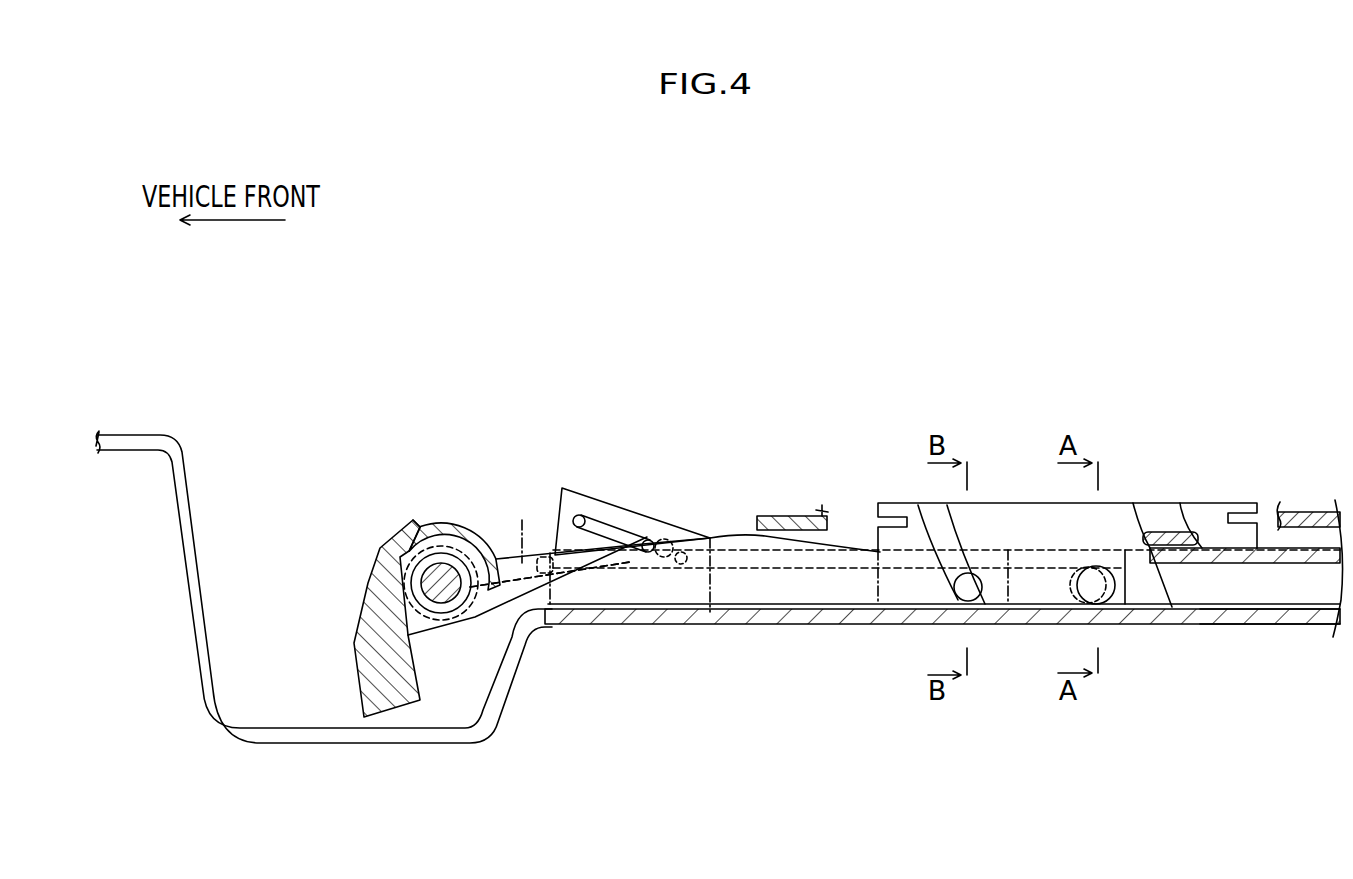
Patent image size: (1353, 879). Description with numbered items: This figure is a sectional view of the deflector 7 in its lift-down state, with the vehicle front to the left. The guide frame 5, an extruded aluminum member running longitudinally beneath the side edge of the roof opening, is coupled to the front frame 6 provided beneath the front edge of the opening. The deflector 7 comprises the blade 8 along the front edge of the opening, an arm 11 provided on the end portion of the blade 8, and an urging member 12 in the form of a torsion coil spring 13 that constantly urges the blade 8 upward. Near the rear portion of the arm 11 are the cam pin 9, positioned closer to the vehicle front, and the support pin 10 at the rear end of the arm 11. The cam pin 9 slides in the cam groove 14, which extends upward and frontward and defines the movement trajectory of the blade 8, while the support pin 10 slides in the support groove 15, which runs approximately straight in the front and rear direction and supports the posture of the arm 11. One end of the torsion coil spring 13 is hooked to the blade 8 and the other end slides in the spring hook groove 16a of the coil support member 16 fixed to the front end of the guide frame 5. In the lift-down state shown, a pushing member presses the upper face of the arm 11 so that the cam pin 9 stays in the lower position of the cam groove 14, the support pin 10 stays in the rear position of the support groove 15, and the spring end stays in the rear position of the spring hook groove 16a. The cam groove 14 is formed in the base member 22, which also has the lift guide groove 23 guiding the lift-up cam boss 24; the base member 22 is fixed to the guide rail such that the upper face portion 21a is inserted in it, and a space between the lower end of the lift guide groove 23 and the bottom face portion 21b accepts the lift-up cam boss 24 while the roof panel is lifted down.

The guide frame 5 is at (781, 644).
The front frame 6 is at (505, 690).
The deflector 7 is at (344, 558).
The blade 8 is at (370, 662).
The cam pin 9 is at (972, 600).
The support pin 10 is at (1102, 595).
The arm 11 is at (845, 588).
The urging member 12 is at (550, 574).
The torsion coil spring 13 is at (523, 570).
The cam groove 14 is at (960, 541).
The support groove 15 is at (1124, 596).
The coil support member 16 is at (602, 505).
The spring hook groove 16a is at (637, 540).
The upper face portion 21a is at (1300, 552).
The bottom face portion 21b is at (1298, 616).
The base member 22 is at (1017, 520).
The lift guide groove 23 is at (1133, 503).
The lift-up cam boss 24 is at (1175, 532).